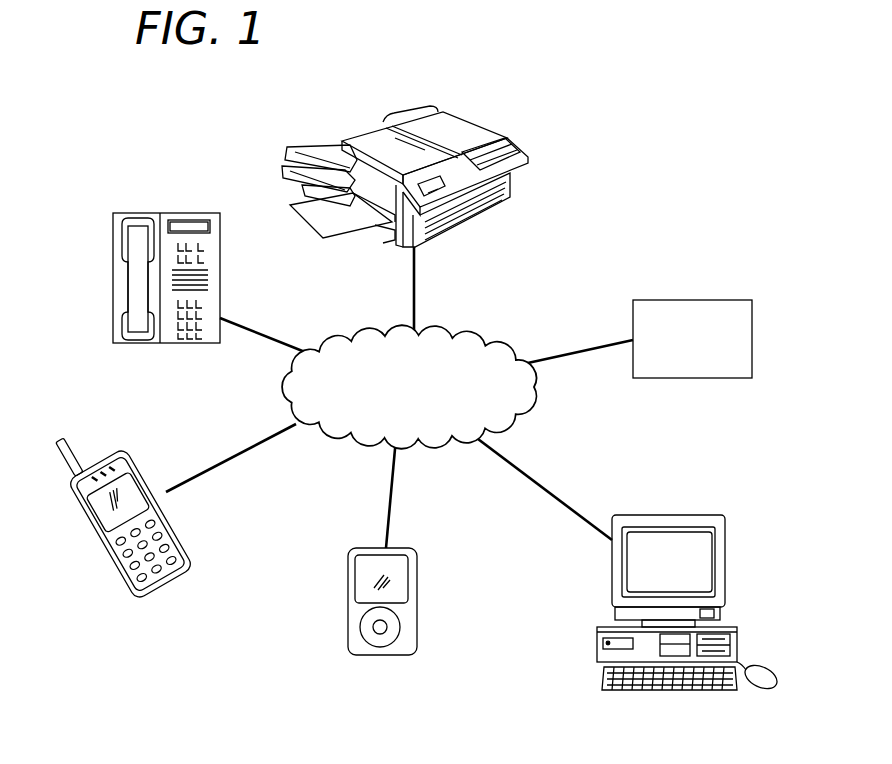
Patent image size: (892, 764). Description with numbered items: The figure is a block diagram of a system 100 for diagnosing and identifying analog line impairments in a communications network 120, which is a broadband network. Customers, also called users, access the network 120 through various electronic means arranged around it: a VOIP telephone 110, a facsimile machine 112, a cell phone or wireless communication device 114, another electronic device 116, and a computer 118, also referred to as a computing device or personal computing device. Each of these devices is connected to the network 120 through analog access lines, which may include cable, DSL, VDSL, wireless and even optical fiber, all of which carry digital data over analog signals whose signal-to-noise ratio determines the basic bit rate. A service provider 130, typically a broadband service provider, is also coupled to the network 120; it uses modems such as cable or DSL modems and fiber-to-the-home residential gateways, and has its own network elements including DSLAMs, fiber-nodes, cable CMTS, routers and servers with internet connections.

The system 100 is at (598, 178).
The VOIP telephone 110 is at (170, 213).
The facsimile machine 112 is at (425, 120).
The cell phone or wireless communication device 114 is at (131, 592).
The other electronic device 116 is at (380, 657).
The computer 118 is at (670, 515).
The communications network 120 is at (352, 333).
The service provider 130 is at (688, 300).